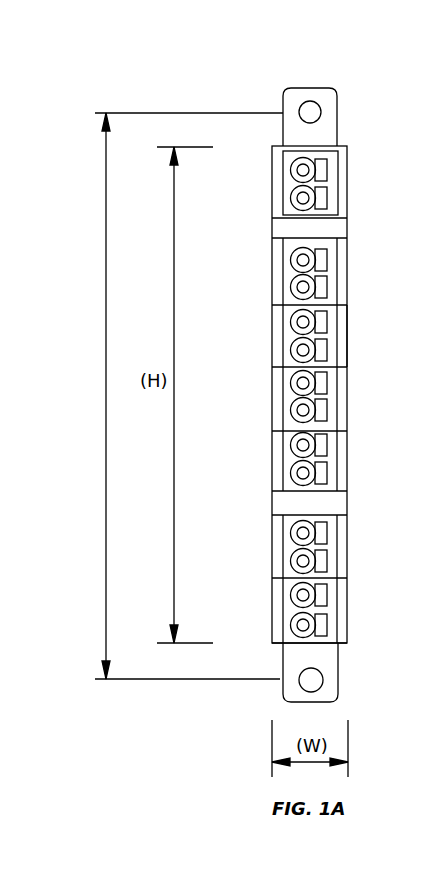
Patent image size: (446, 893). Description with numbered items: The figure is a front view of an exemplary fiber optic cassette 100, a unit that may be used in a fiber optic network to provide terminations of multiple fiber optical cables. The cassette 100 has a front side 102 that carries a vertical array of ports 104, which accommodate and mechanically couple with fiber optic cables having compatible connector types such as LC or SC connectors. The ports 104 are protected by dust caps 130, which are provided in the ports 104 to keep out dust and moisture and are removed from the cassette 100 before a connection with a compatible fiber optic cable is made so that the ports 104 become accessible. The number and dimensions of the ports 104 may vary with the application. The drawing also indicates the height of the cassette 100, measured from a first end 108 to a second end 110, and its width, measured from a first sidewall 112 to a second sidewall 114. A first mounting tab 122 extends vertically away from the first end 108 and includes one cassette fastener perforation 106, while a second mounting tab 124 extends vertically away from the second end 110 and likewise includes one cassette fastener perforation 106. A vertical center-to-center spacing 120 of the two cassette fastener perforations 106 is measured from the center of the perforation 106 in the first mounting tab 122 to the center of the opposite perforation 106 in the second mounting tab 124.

The fiber optic cassette 100 is at (330, 63).
The front side 102 is at (303, 269).
The ports 104 is at (325, 287).
The cassette fastener perforation 106 is at (310, 112).
The first end 108 is at (345, 147).
The second end 110 is at (342, 643).
The first sidewall 112 is at (272, 340).
The second sidewall 114 is at (348, 338).
The vertical center-to-center spacing 120 is at (164, 396).
The first mounting tab 122 is at (290, 102).
The second mounting tab 124 is at (283, 690).
The dust caps 130 is at (303, 625).